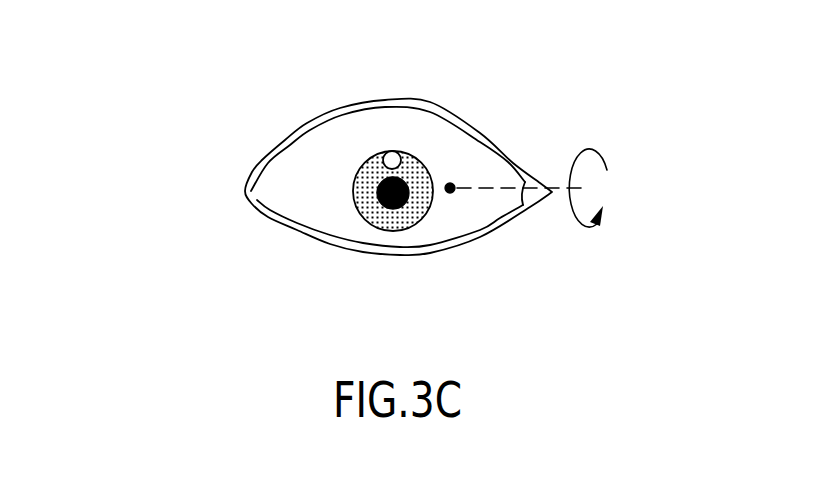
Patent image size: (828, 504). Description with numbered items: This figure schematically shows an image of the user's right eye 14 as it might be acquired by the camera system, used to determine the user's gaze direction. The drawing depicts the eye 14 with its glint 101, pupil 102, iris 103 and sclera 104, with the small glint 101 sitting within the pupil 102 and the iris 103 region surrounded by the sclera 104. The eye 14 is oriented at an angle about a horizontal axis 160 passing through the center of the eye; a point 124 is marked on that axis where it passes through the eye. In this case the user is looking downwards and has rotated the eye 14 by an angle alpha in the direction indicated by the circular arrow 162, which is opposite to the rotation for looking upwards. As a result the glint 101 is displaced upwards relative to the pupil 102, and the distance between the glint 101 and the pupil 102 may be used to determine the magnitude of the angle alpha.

The right eye 14 is at (216, 152).
The glint 101 is at (392, 152).
The pupil 102 is at (378, 201).
The iris 103 is at (420, 207).
The sclera 104 is at (328, 192).
The eye rotation center 124 is at (452, 184).
The horizontal axis 160 is at (480, 190).
The circular arrow 162 is at (573, 150).